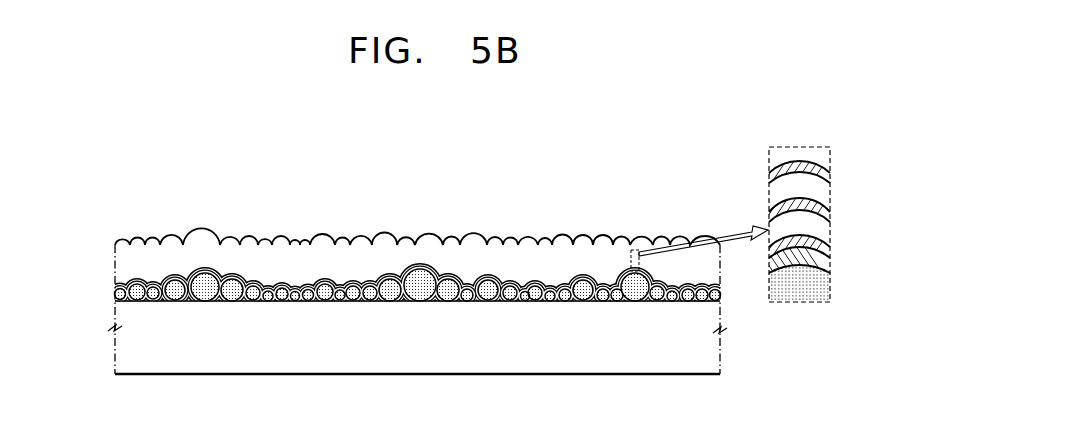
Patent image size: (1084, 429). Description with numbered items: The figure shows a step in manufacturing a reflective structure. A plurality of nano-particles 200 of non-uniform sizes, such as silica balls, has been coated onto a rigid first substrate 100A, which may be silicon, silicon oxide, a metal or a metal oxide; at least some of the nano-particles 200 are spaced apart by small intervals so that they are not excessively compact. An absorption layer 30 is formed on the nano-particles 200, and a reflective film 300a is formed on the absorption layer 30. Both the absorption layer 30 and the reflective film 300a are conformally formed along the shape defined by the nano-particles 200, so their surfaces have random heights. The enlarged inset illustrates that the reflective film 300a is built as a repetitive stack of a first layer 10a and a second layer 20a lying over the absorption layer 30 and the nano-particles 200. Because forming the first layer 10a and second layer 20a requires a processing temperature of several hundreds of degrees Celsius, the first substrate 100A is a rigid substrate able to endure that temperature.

The first substrate 100A is at (115, 363).
The nano-particles 200 is at (98, 294).
The reflective film 300a is at (115, 268).
The first layer 10a is at (829, 249).
The second layer 20a is at (825, 228).
The absorption layer 30 is at (716, 287).